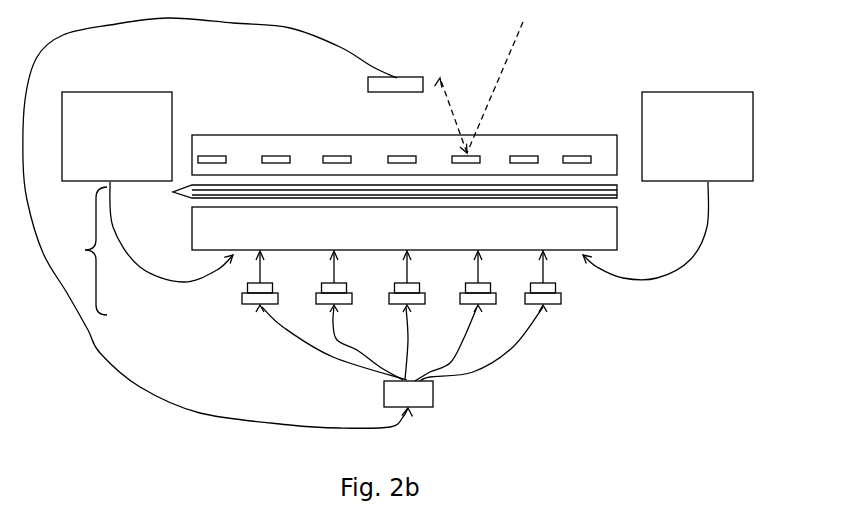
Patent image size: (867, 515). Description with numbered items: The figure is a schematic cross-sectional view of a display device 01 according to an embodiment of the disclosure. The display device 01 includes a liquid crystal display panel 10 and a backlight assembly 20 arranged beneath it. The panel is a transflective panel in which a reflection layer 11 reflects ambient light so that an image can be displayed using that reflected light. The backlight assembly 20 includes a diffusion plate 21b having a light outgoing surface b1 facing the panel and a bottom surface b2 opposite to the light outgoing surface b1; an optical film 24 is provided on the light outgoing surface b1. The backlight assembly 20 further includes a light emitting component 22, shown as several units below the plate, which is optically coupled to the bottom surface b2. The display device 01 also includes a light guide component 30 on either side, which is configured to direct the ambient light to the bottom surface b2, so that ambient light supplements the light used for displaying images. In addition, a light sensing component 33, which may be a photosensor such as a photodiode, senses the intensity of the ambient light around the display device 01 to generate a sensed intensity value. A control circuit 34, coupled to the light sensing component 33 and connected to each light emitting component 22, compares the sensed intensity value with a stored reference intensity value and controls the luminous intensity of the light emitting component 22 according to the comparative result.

The display device 01 is at (84, 20).
The light guide component 30 is at (131, 142).
The light sensing component 33 is at (412, 82).
The liquid crystal display panel 10 is at (542, 155).
The reflection layer 11 is at (277, 162).
The optical film 24 is at (383, 194).
The light outgoing surface b1 is at (605, 207).
The diffusion plate 21b is at (220, 222).
The backlight assembly 20 is at (83, 251).
The light emitting component 22 is at (240, 297).
The bottom surface b2 is at (363, 251).
The control circuit 34 is at (422, 400).